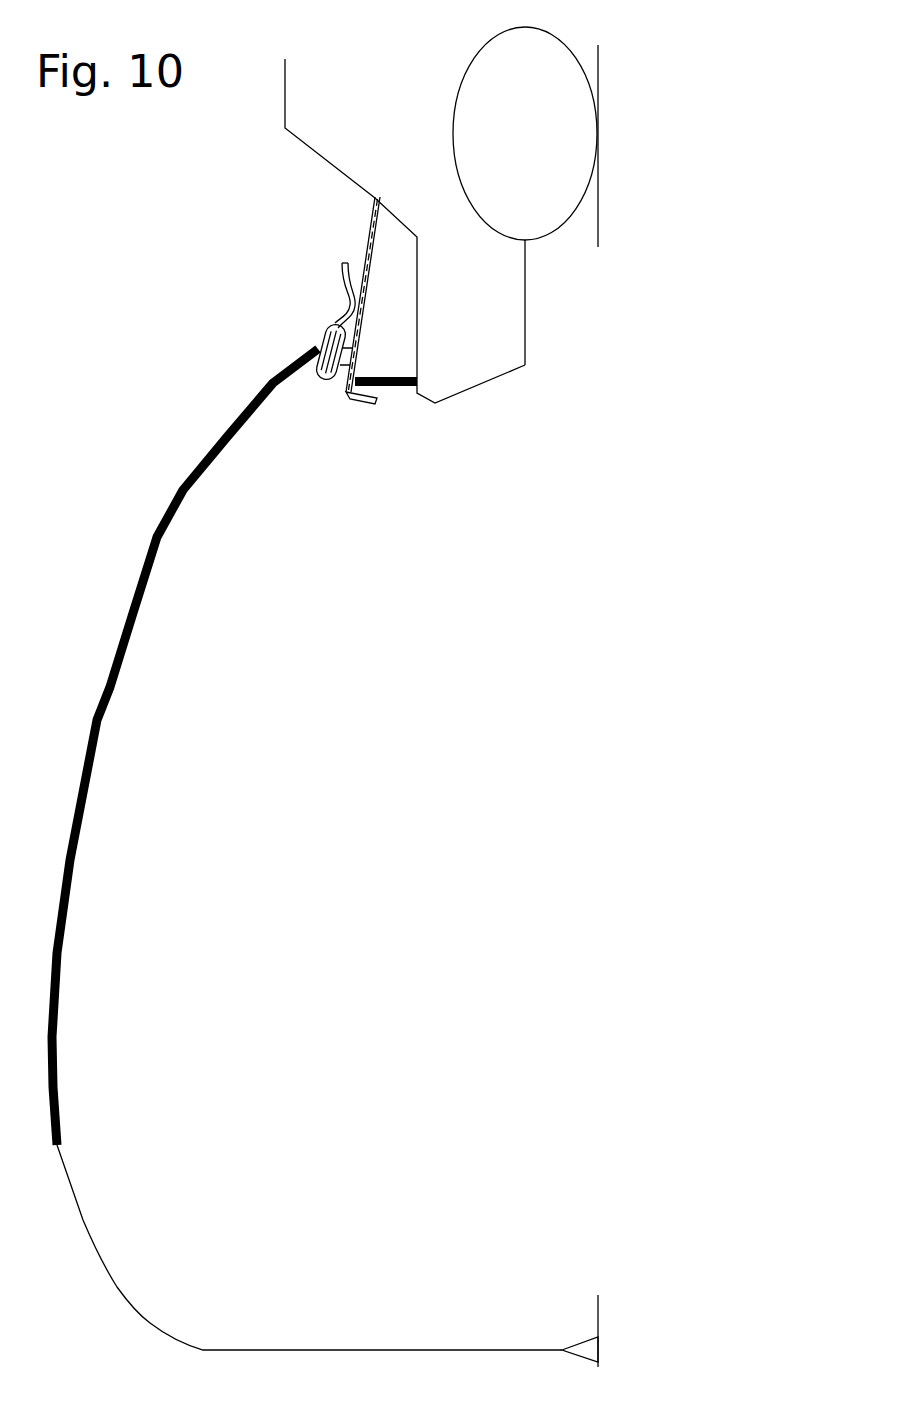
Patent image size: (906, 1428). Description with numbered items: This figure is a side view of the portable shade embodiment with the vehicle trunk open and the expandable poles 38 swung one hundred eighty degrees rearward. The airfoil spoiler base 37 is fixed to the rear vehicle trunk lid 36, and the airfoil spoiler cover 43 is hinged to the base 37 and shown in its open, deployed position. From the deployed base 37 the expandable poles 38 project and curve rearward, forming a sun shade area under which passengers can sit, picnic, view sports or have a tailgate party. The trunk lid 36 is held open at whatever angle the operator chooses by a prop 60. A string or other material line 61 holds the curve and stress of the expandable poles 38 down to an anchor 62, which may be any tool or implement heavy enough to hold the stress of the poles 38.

The rear vehicle trunk lid 36 is at (353, 363).
The airfoil spoiler base 37 is at (343, 333).
The airfoil spoiler cover 43 is at (352, 298).
The prop 60 is at (390, 392).
The expandable poles 38 is at (112, 697).
The floor line 61 is at (258, 1350).
The anchor 62 is at (587, 1347).